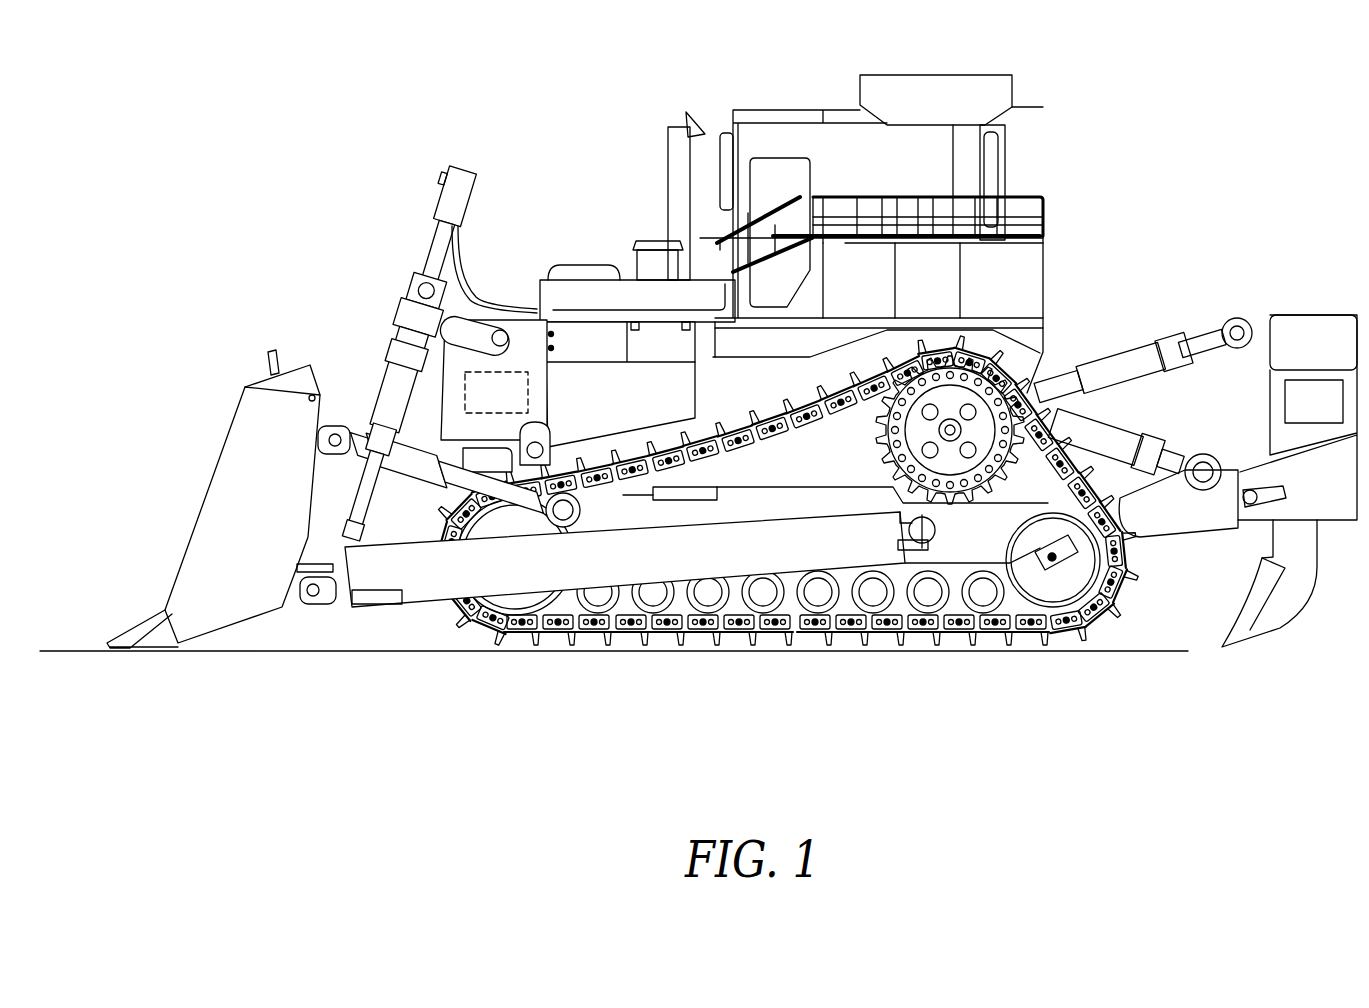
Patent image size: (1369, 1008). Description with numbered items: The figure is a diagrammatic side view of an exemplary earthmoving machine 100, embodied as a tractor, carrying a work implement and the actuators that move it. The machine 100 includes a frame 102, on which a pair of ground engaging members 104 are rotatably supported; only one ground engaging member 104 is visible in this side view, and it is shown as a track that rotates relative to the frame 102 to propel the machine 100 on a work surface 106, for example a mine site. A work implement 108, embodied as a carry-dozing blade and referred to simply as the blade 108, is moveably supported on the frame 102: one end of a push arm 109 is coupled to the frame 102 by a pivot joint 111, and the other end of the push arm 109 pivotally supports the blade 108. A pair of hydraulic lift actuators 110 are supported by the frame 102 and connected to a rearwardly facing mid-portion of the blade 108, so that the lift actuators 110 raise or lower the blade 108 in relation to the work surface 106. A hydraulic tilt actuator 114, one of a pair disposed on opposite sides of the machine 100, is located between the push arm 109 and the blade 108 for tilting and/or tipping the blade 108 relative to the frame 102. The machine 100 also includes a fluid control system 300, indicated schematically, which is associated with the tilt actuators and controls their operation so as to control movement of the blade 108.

The earthmoving machine 100 is at (242, 83).
The frame 102 is at (975, 540).
The ground engaging members 104 is at (602, 650).
The work surface 106 is at (73, 650).
The work implement 108 is at (247, 383).
The push arm 109 is at (775, 548).
The hydraulic lift actuators 110 is at (437, 210).
The pivot joint 111 is at (915, 545).
The hydraulic tilt actuator 114 is at (423, 477).
The fluid control system 300 is at (516, 405).